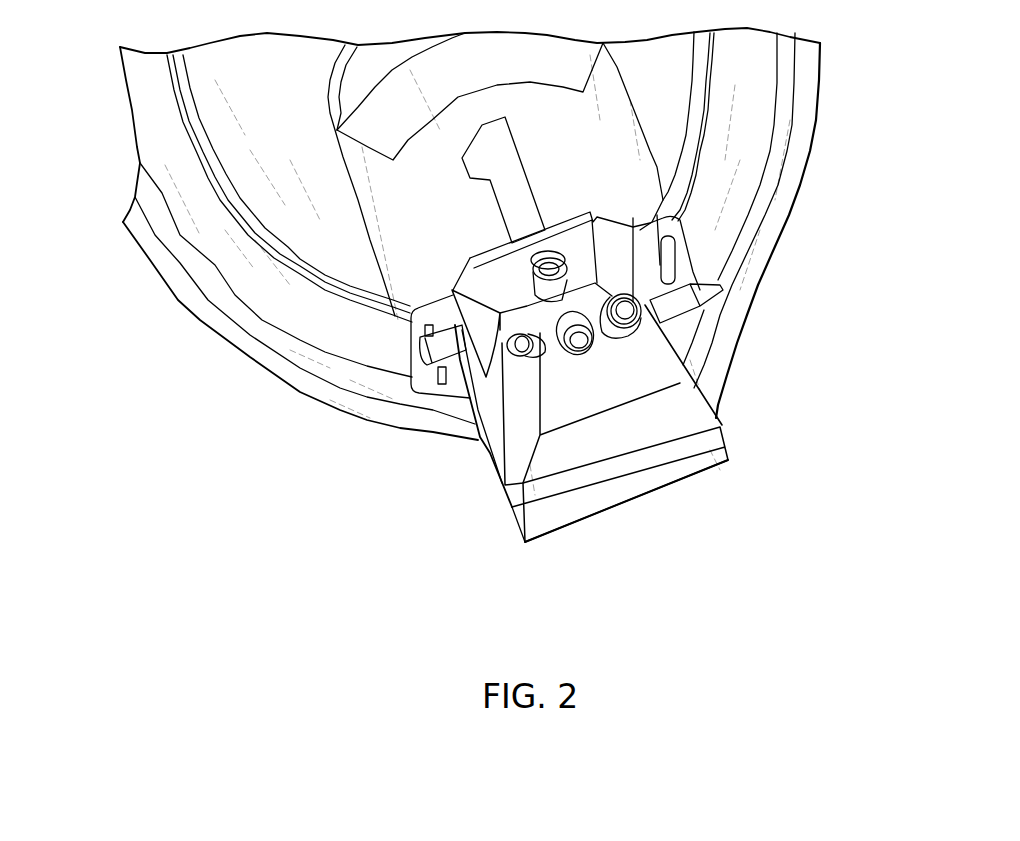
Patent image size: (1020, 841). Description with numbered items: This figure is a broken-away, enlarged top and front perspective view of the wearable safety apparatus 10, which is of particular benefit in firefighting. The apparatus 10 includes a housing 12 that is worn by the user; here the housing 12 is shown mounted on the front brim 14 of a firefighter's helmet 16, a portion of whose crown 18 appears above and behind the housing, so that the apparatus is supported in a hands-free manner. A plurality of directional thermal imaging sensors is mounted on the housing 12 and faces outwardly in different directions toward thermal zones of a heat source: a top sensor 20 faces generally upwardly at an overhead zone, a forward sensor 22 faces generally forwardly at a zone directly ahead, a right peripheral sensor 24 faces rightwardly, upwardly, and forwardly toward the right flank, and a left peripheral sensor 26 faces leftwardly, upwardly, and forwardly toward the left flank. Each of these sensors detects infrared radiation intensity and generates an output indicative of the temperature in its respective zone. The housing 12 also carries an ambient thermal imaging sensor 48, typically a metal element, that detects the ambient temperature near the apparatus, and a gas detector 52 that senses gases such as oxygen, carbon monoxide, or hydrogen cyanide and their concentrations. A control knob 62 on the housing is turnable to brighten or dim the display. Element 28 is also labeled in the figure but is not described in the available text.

The wearable safety apparatus 10 is at (490, 487).
The housing 12 is at (687, 390).
The front brim 14 is at (382, 388).
The helmet 16 is at (172, 304).
The crown 18 is at (243, 60).
The top sensor 20 is at (543, 252).
The forward sensor 22 is at (580, 352).
The right peripheral sensor 24 is at (465, 318).
The left peripheral sensor 26 is at (623, 298).
The base plate 28 is at (622, 493).
The ambient thermal imaging sensor 48 is at (548, 258).
The gas detector 52 is at (707, 315).
The control knob 62 is at (414, 352).